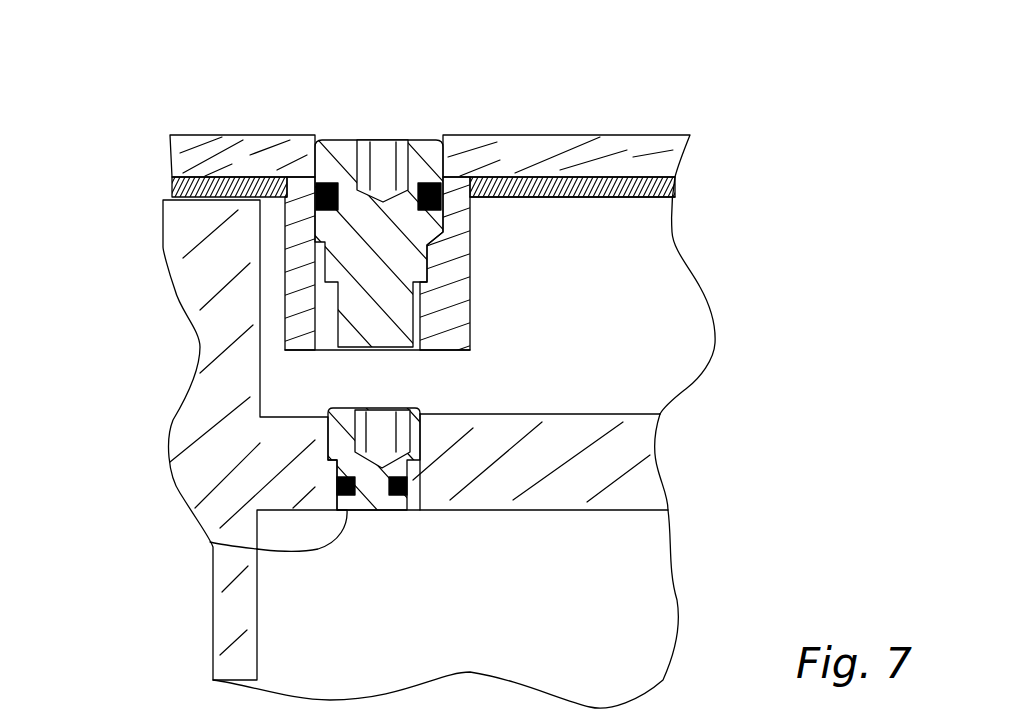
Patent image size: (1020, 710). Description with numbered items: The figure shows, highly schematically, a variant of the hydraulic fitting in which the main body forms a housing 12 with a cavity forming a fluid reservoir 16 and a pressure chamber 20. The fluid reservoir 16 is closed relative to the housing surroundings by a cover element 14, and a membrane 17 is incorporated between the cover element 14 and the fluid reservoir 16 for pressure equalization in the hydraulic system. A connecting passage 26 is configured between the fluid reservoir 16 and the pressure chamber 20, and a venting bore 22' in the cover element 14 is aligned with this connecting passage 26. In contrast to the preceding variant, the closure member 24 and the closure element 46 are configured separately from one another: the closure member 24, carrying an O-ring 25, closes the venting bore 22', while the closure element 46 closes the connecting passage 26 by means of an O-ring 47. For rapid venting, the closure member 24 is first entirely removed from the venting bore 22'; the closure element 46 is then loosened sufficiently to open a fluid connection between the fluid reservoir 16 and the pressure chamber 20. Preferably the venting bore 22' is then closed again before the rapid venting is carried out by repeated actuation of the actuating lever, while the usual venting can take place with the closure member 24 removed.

The housing 12 is at (170, 258).
The cover element 14 is at (560, 157).
The fluid reservoir 16 is at (615, 315).
The membrane 17 is at (633, 187).
The pressure chamber 20 is at (478, 615).
The venting bore 22' is at (397, 228).
The closure member 24 is at (350, 160).
The O-ring 25 is at (313, 175).
The connecting passage 26 is at (210, 540).
The closure element 46 is at (342, 408).
The O-ring 47 is at (330, 478).